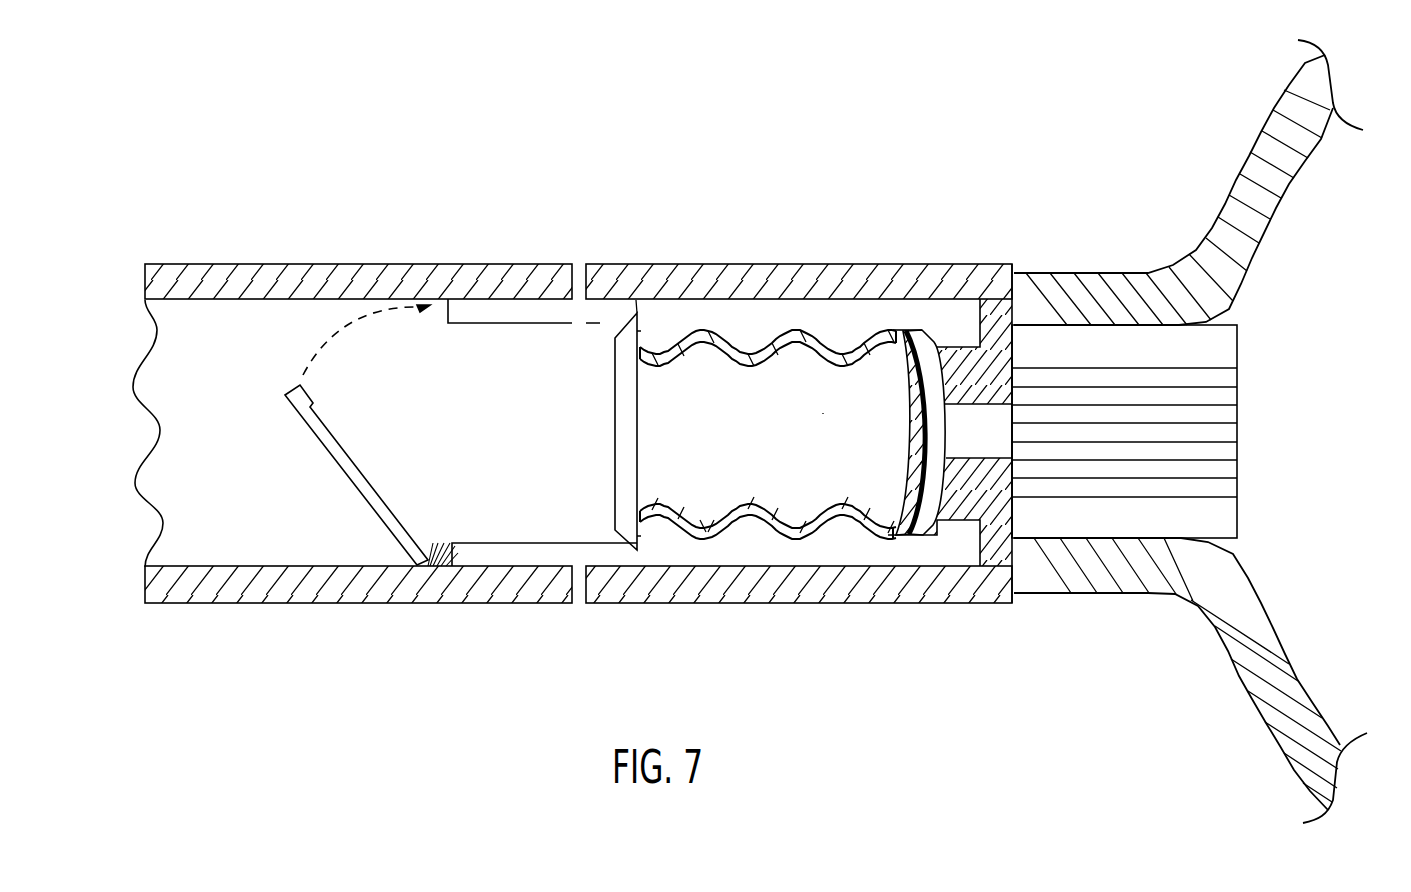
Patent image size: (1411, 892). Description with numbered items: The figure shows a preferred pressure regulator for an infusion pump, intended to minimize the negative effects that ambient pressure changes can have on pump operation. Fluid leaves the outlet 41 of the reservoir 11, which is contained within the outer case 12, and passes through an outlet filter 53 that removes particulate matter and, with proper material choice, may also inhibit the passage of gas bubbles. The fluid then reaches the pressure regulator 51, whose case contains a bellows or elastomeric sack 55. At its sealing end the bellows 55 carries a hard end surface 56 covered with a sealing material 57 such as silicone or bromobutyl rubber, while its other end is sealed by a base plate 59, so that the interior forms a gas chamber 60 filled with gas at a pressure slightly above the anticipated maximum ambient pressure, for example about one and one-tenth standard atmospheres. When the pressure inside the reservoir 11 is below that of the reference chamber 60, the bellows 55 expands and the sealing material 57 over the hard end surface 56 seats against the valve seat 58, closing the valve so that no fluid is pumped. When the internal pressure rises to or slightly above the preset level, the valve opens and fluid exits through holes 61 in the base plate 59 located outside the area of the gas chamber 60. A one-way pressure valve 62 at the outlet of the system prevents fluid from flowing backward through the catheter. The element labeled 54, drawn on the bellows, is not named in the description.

The reservoir 11 is at (1383, 352).
The outer case 12 is at (1225, 718).
The outlet 41 is at (1310, 427).
The pressure regulator 51 is at (285, 645).
The outlet filter 53 is at (1223, 467).
The bellows 54 is at (782, 545).
The bellows 55 is at (707, 527).
The hard end surface 56 is at (895, 540).
The sealing material 57 is at (920, 540).
The valve seat 58 is at (965, 492).
The base plate 59 is at (638, 428).
The gas chamber 60 is at (823, 413).
The holes 61 is at (615, 542).
The one-way pressure valve 62 is at (381, 520).